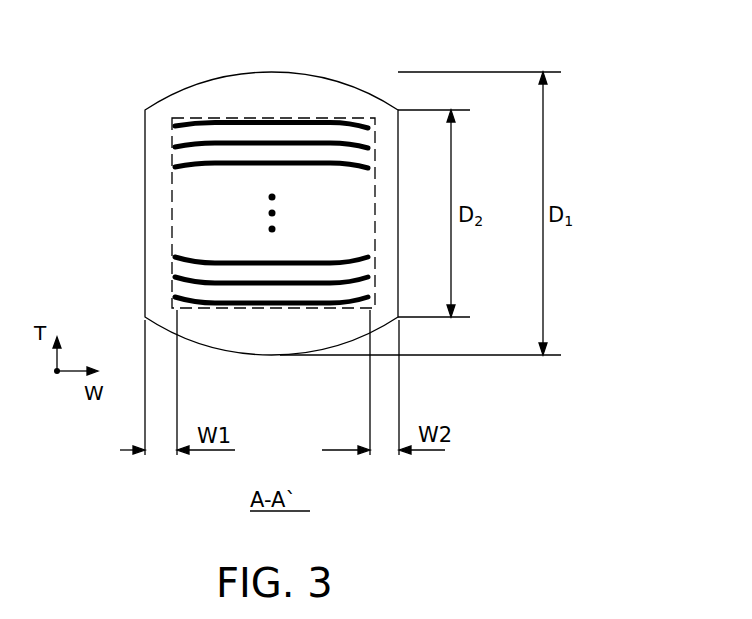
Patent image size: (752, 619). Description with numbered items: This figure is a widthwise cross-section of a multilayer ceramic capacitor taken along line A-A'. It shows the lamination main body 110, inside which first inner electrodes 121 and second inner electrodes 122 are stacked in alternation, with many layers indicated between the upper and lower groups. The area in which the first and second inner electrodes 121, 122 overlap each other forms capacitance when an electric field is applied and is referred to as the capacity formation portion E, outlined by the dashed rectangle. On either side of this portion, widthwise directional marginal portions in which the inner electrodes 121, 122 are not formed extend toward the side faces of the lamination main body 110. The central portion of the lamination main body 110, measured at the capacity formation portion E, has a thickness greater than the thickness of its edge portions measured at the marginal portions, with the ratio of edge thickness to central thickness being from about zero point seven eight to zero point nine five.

The lamination main body 110 is at (168, 97).
The first inner electrode 121 is at (232, 142).
The second inner electrode 122 is at (352, 121).
The capacity formation portion E is at (173, 185).